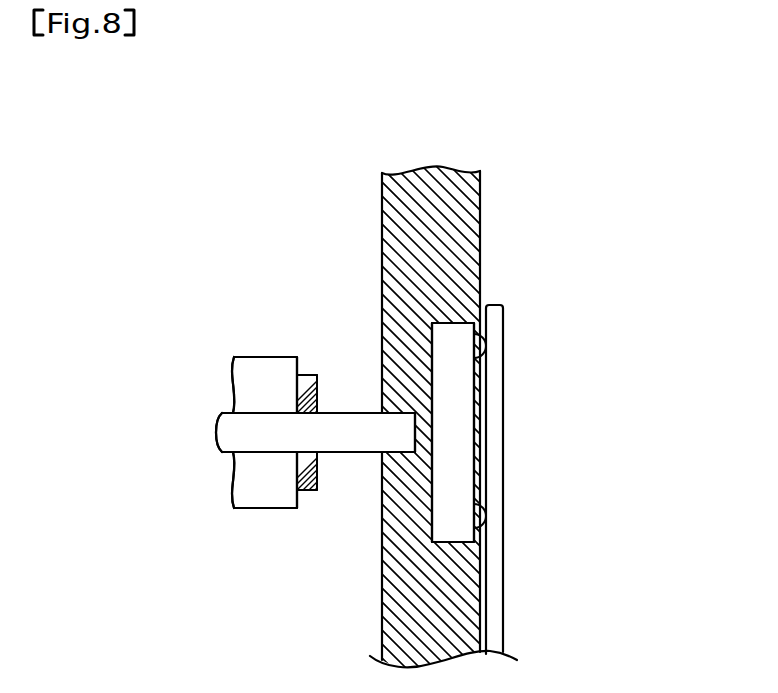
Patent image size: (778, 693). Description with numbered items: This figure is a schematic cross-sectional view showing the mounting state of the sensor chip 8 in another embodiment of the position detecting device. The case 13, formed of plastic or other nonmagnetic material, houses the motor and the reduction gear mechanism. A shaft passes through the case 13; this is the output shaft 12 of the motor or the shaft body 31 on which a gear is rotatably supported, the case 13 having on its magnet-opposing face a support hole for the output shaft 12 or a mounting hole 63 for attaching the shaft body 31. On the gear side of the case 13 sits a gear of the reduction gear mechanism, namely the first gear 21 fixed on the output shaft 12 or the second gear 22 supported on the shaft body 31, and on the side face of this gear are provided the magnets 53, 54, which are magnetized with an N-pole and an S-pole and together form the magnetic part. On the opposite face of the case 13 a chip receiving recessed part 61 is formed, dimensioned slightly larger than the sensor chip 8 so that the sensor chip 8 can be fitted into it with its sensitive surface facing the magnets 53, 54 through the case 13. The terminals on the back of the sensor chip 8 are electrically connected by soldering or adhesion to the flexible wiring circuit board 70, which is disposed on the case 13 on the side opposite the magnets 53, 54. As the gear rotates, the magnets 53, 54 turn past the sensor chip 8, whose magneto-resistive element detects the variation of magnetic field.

The case 13 is at (393, 210).
The sensor chip 8 is at (447, 350).
The chip receiving recessed part 61 is at (448, 321).
The mounting hole 63 is at (418, 452).
The flexible wiring circuit board 70 is at (492, 608).
The output shaft 12 is at (362, 428).
The shaft body 31 is at (362, 428).
The first gear 21 is at (257, 484).
The second gear 22 is at (257, 484).
The magnet 53 is at (303, 492).
The magnet 54 is at (303, 492).